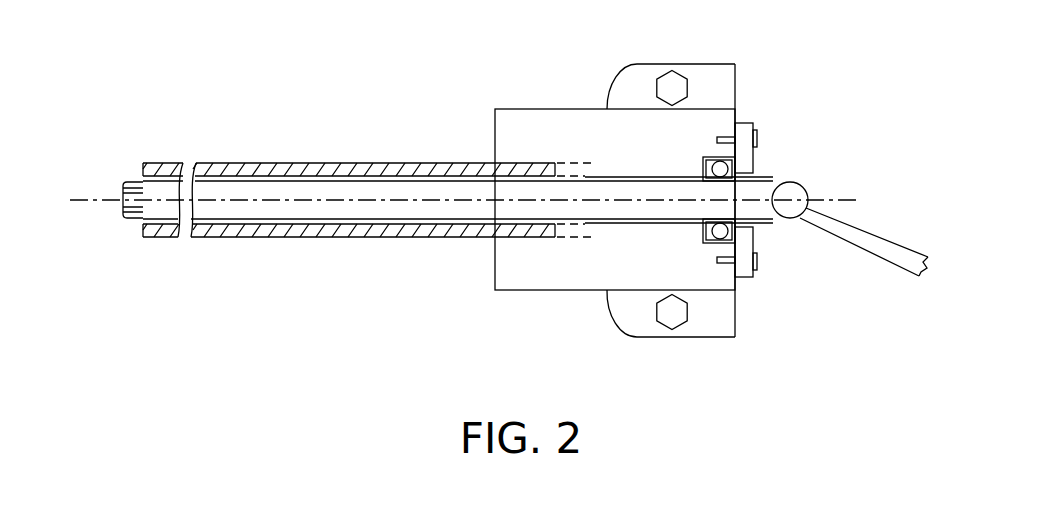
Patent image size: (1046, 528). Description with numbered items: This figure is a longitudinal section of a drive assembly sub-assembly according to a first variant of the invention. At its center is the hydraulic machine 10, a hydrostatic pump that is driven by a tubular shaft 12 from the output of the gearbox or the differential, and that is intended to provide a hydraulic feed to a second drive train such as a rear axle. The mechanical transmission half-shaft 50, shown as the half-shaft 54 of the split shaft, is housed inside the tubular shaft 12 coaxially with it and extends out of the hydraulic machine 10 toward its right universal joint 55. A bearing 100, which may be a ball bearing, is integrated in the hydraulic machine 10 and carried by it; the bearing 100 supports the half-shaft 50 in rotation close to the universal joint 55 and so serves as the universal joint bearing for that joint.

The hydraulic machine 10 is at (582, 138).
The tubular shaft 12 is at (332, 165).
The half-shaft 50 is at (362, 212).
The half-shaft 54 is at (478, 207).
The universal joint 55 is at (790, 190).
The bearing 100 is at (717, 246).